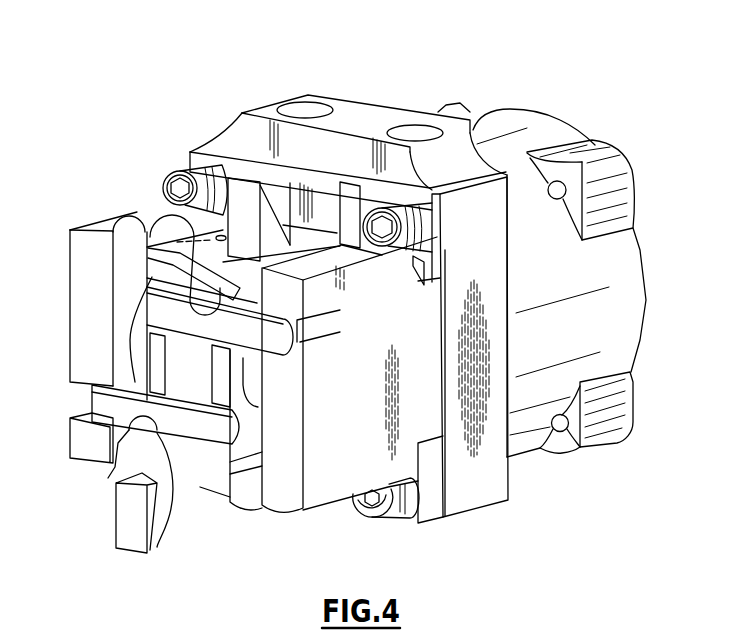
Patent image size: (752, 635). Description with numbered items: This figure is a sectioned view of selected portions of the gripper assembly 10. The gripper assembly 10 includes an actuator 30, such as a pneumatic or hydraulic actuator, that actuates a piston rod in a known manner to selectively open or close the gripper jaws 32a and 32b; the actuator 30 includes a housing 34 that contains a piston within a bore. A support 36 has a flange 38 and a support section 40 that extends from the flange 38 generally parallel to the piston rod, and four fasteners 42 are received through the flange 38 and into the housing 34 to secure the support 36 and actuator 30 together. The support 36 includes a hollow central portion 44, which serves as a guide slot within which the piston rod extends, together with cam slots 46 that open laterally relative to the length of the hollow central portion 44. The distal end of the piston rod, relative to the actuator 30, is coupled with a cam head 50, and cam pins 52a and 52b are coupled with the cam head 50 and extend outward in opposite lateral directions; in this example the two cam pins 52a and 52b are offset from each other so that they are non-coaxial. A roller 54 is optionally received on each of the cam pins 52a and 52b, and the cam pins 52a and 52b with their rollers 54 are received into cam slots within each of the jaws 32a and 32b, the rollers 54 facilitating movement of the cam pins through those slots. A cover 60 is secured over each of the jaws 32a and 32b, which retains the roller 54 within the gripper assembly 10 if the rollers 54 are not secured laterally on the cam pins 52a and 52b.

The gripper assembly 10 is at (378, 64).
The actuator 30 is at (626, 330).
The gripper jaw 32a is at (270, 212).
The gripper jaw 32b is at (160, 540).
The housing 34 is at (476, 493).
The support 36 is at (204, 147).
The flange 38 is at (440, 217).
The support section 40 is at (157, 257).
The fasteners 42 is at (403, 507).
The hollow central portion 44 is at (165, 277).
The cam slots 46 is at (172, 217).
The cam head 50 is at (194, 388).
The cam pin 52a is at (300, 336).
The cam pin 52b is at (100, 404).
The roller 54 is at (259, 399).
The cover 60 is at (343, 477).